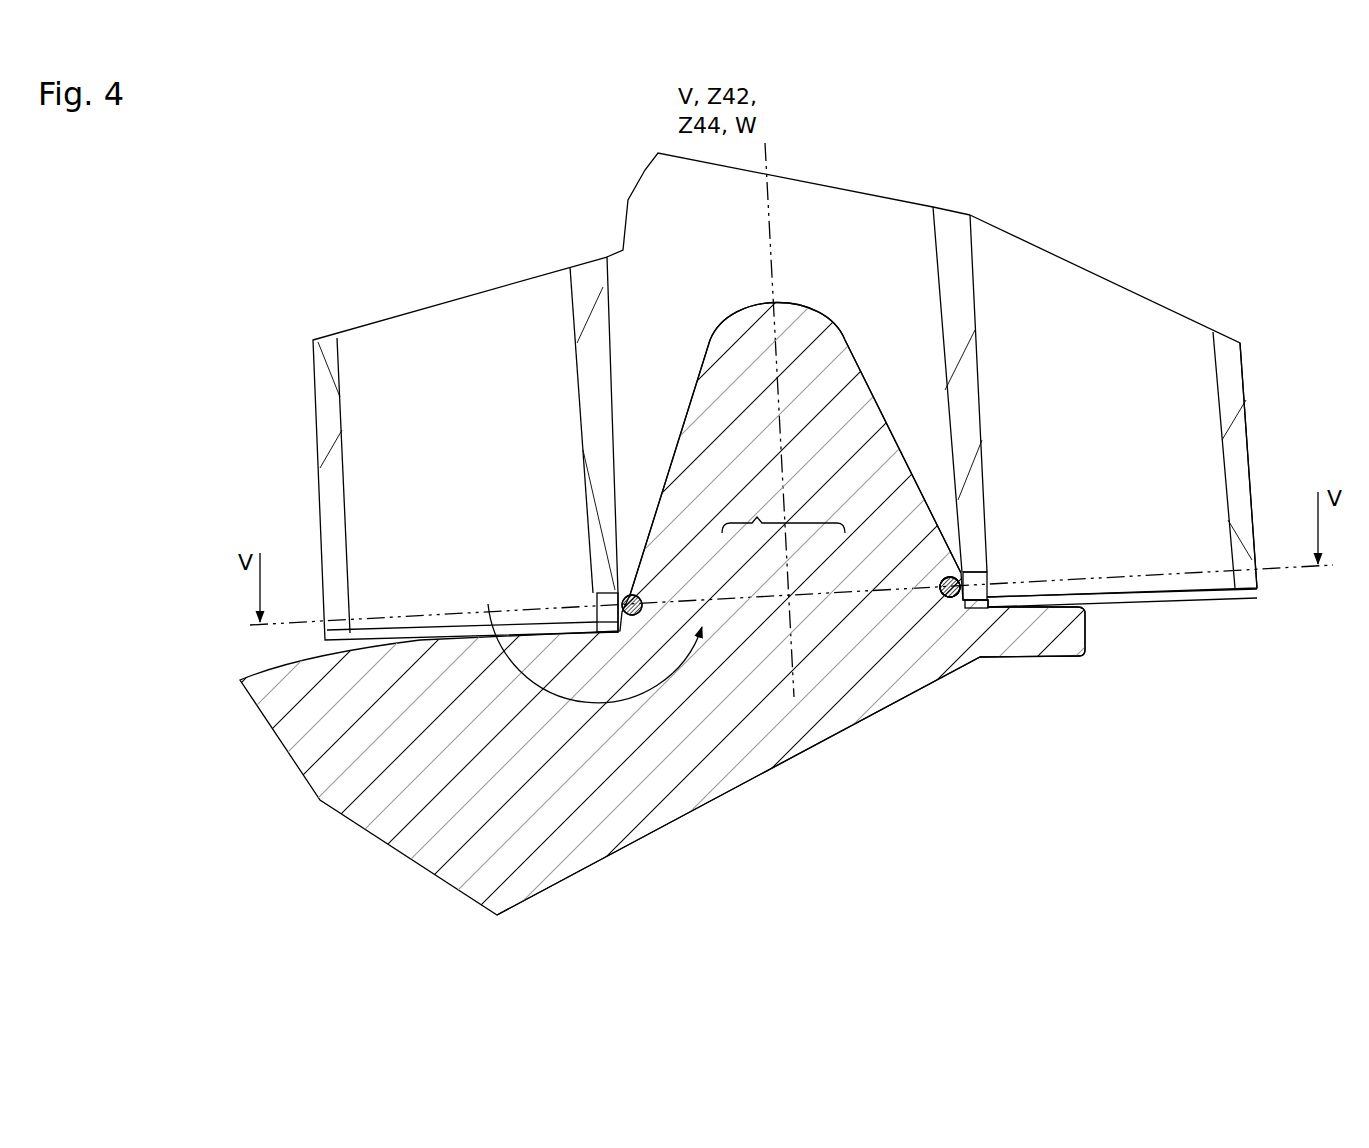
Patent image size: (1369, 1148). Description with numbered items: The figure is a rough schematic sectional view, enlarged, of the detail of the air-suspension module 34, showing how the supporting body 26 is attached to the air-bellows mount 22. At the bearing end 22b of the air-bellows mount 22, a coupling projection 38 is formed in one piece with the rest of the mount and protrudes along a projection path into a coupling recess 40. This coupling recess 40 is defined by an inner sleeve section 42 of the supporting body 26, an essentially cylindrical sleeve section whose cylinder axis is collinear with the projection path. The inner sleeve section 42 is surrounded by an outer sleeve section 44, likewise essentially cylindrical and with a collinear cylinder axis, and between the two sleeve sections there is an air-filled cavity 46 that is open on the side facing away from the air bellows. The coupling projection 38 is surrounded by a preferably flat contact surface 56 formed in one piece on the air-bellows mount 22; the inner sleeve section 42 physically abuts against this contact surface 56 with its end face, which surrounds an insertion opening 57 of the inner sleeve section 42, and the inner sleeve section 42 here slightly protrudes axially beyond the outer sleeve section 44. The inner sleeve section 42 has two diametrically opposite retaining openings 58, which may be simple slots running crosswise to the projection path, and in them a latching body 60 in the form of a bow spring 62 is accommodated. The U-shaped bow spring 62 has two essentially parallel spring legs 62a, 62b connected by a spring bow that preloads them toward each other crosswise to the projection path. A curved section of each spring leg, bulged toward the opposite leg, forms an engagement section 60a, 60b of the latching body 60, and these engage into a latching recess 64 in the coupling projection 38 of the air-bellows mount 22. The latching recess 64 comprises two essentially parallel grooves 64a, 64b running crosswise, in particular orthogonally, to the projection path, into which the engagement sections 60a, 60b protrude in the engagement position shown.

The air-bellows mount 22 is at (355, 773).
The bearing end 22b is at (991, 683).
The supporting body 26 is at (1280, 427).
The air-suspension module 34 is at (855, 824).
The coupling projection 38 is at (738, 314).
The coupling recess 40 is at (887, 274).
The inner sleeve section 42 is at (962, 307).
The outer sleeve section 44 is at (1226, 373).
The air-filled cavity 46 is at (456, 422).
The contact surface 56 is at (1058, 604).
The insertion opening 57 is at (586, 637).
The retaining opening 58 is at (992, 573).
The latching body 60 is at (940, 513).
The bow spring 62 is at (958, 572).
The engagement section 60a is at (633, 617).
The engagement section 60b is at (948, 600).
The spring leg 62a is at (600, 606).
The spring leg 62b is at (990, 580).
The latching recess 64 is at (783, 511).
The groove 64a is at (648, 597).
The groove 64b is at (936, 582).